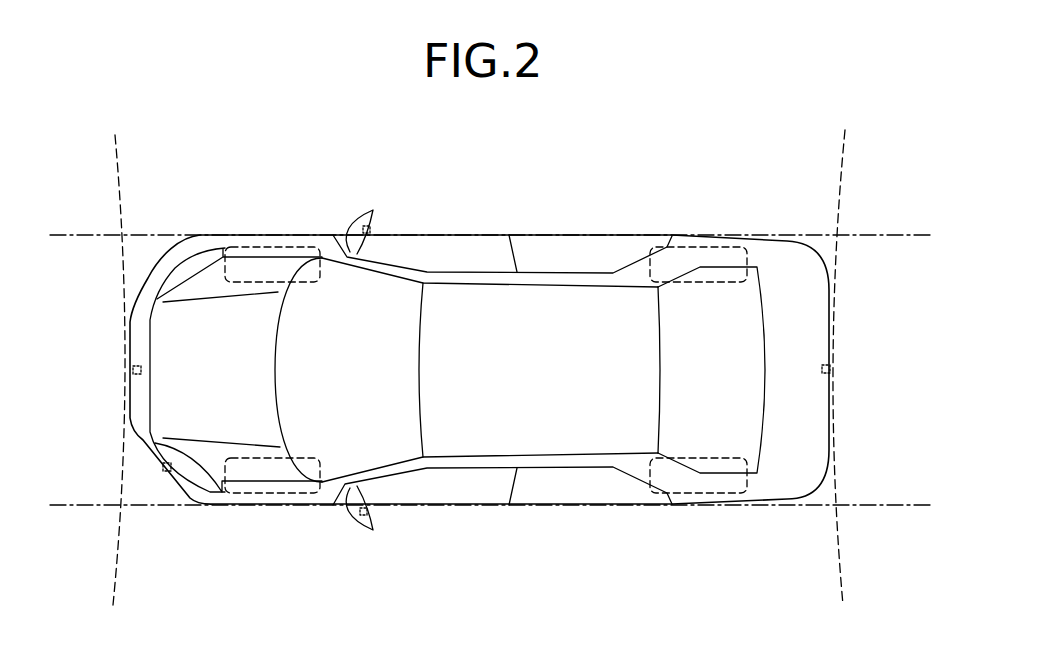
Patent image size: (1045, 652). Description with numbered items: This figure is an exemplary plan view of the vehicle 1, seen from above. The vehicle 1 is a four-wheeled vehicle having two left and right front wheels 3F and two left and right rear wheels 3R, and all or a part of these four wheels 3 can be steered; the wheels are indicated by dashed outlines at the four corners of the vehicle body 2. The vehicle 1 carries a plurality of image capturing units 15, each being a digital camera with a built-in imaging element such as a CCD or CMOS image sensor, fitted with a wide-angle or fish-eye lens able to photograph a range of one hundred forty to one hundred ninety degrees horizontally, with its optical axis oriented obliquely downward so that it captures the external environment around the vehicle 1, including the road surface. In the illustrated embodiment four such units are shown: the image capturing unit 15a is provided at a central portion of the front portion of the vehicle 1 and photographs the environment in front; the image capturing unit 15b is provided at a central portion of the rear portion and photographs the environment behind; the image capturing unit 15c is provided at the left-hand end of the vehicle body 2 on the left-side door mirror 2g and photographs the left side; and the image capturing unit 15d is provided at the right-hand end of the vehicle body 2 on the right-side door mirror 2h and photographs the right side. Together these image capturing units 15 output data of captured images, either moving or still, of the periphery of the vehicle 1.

The vehicle 1 is at (543, 168).
The vehicle body 2 is at (625, 230).
The left-side door mirror 2g is at (374, 518).
The right-side door mirror 2h is at (374, 222).
The wheels 3 is at (486, 376).
The front wheels 3F is at (257, 245).
The rear wheels 3R is at (694, 247).
The image capturing unit 15 is at (481, 375).
The image capturing unit 15a is at (133, 370).
The image capturing unit 15b is at (830, 370).
The image capturing unit 15c is at (363, 515).
The image capturing unit 15d is at (366, 226).